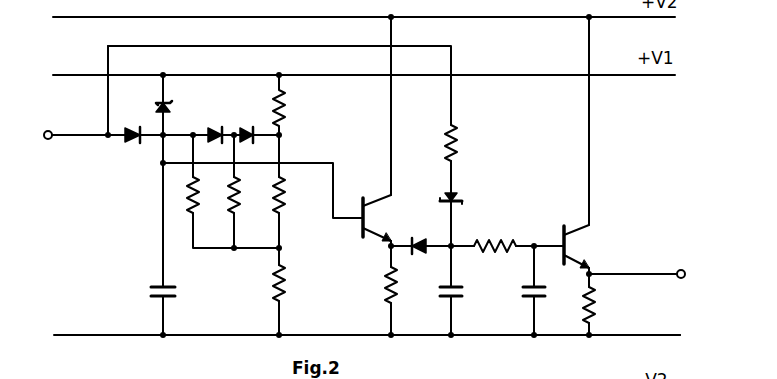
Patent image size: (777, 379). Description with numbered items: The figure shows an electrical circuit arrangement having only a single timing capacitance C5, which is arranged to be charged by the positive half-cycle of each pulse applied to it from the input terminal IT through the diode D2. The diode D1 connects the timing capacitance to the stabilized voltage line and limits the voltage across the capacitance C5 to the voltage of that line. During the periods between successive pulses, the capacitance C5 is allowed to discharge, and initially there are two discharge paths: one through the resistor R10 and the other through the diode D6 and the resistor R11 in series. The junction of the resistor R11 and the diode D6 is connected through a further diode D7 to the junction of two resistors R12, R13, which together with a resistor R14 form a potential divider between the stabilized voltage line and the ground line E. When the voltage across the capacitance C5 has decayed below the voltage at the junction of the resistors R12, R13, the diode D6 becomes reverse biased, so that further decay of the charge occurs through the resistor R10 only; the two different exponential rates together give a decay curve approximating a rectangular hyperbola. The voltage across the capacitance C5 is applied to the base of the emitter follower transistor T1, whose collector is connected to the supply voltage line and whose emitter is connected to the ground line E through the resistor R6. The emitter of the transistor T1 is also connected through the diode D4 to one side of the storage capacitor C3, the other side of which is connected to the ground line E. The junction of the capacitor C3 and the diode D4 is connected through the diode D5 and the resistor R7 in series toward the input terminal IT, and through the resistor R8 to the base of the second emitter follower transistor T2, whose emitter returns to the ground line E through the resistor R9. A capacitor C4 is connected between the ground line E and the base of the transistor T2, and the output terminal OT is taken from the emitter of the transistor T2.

The input terminal IT is at (53, 124).
The output terminal OT is at (675, 262).
The diode D1 is at (168, 100).
The diode D2 is at (134, 142).
The diode D4 is at (417, 251).
The diode D5 is at (458, 196).
The diode D6 is at (207, 131).
The diode D7 is at (242, 131).
The resistor R6 is at (387, 274).
The resistor R7 is at (458, 146).
The resistor R8 is at (495, 232).
The resistor R9 is at (599, 322).
The resistor R10 is at (190, 207).
The resistor R11 is at (233, 212).
The resistor R12 is at (287, 118).
The resistor R13 is at (303, 203).
The resistor R14 is at (289, 305).
The storage capacitor C3 is at (459, 289).
The capacitor C4 is at (542, 289).
The timing capacitance C5 is at (177, 292).
The emitter follower transistor T1 is at (383, 218).
The second emitter follower transistor T2 is at (585, 246).
The ground line E is at (636, 336).